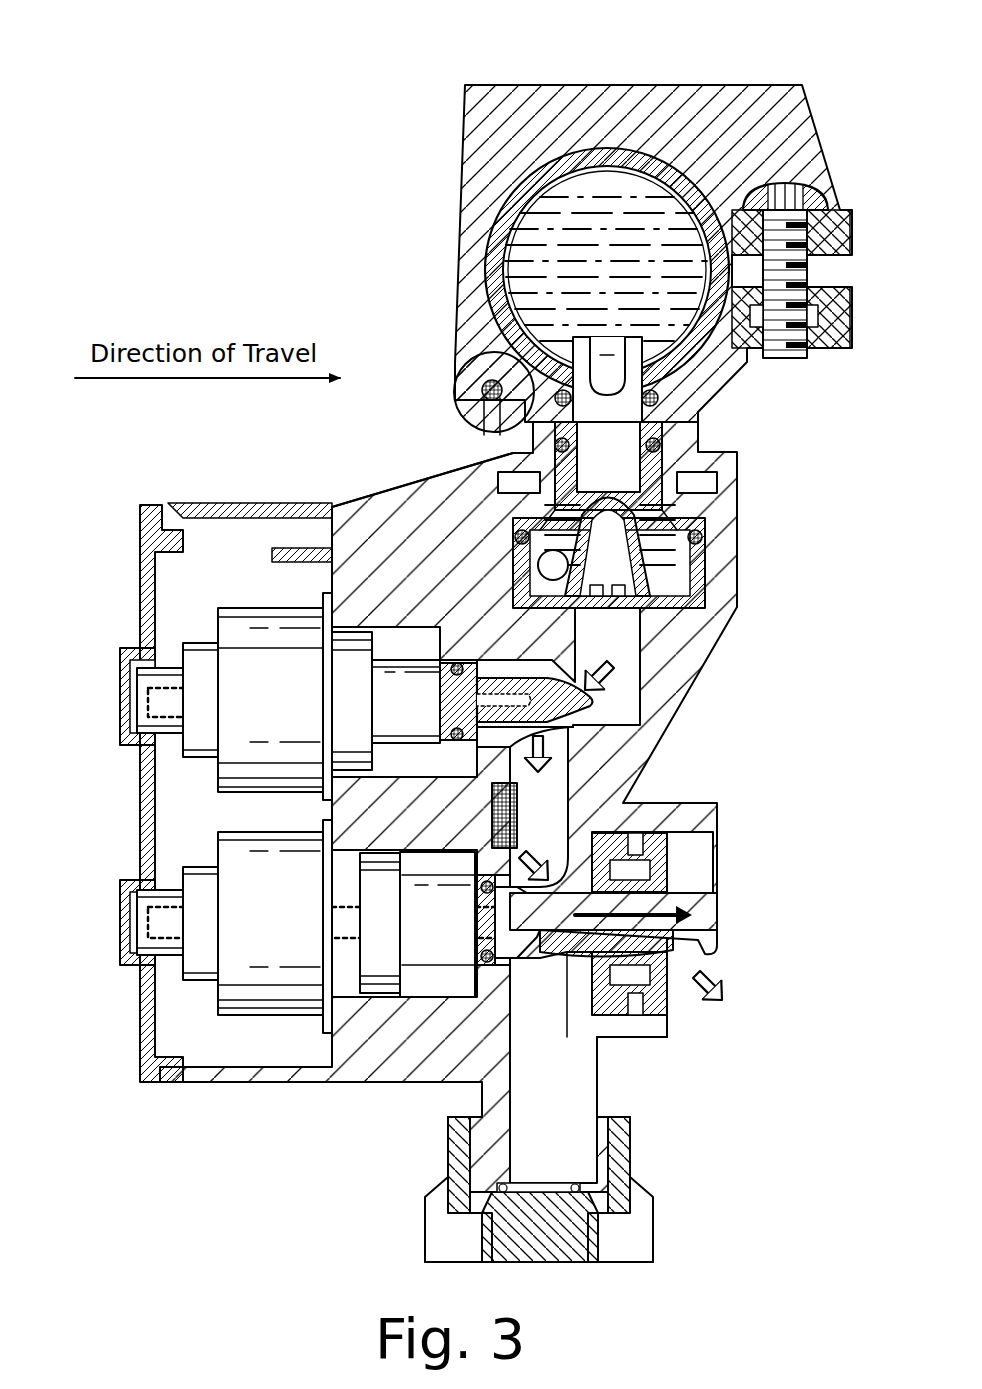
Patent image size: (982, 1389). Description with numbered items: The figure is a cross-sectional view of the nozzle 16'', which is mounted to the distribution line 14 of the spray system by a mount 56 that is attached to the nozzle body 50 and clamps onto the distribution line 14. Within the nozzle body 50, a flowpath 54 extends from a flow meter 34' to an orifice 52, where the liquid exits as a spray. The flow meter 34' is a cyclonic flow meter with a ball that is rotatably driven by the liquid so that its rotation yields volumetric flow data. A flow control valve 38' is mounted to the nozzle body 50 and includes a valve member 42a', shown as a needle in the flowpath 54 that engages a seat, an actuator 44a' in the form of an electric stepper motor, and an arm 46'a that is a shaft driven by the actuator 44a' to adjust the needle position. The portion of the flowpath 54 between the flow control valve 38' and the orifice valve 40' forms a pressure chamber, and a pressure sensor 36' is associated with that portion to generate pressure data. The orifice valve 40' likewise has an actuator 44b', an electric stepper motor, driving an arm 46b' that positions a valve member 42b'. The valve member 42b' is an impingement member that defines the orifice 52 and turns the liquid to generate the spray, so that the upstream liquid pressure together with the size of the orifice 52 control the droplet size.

The distribution line 14 is at (552, 157).
The mount 56 is at (668, 118).
The nozzle 16'' is at (340, 480).
The actuator 44a' is at (289, 615).
The flow control valve 38' is at (383, 590).
The flow meter 34' is at (679, 515).
The flowpath 54 is at (646, 687).
The valve member 42a' is at (635, 723).
The arm 46'a is at (224, 743).
The pressure sensor 36' is at (380, 815).
The arm 46b' is at (271, 964).
The actuator 44b' is at (339, 986).
The nozzle body 50 is at (405, 1065).
The orifice 52 is at (672, 955).
The valve member 42b' is at (626, 1015).
The orifice valve 40' is at (686, 1007).